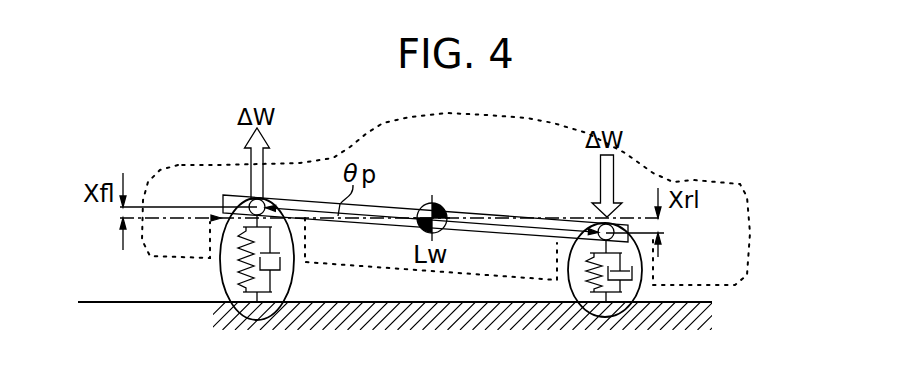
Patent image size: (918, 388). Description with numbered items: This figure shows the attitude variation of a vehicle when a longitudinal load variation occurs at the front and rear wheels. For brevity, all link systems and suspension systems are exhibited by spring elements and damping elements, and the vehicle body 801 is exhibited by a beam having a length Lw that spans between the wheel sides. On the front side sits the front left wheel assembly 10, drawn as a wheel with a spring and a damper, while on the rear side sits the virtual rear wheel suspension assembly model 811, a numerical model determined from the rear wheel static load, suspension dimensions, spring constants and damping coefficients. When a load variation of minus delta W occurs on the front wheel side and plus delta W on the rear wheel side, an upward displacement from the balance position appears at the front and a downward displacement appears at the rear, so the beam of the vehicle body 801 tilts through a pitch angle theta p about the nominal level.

The front left wheel assembly 10 is at (222, 290).
The vehicle body 801 is at (464, 212).
The virtual rear wheel suspension assembly model 811 is at (641, 290).